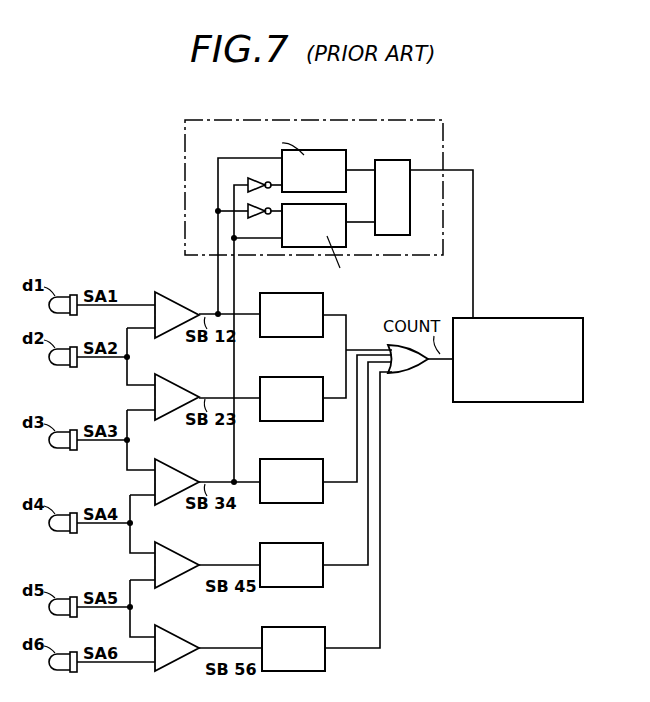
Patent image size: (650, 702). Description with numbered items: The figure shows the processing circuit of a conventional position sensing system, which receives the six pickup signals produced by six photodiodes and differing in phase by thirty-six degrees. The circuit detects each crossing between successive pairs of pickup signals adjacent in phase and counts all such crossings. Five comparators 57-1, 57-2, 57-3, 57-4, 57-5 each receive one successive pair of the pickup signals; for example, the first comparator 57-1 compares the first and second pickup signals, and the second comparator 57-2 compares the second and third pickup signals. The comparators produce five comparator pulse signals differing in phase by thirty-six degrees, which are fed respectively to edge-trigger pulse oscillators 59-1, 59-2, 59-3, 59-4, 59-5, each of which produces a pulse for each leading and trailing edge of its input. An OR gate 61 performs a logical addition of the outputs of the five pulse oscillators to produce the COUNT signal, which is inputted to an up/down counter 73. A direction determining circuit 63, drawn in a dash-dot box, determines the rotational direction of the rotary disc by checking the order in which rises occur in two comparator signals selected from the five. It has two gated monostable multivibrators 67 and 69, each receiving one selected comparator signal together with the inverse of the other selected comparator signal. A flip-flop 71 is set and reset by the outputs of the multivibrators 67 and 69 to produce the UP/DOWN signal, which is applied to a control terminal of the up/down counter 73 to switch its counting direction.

The direction determining circuit 63 is at (310, 300).
The gated monostable multivibrator 67 is at (347, 160).
The gated monostable multivibrator 69 is at (347, 238).
The flip-flop 71 is at (402, 162).
The first comparator 57-1 is at (175, 284).
The second comparator 57-2 is at (175, 367).
The comparator 57-3 is at (175, 451).
The comparator 57-4 is at (175, 534).
The comparator 57-5 is at (175, 617).
The edge-trigger pulse oscillator 59-1 is at (270, 293).
The edge-trigger pulse oscillator 59-2 is at (270, 377).
The edge-trigger pulse oscillator 59-3 is at (270, 459).
The edge-trigger pulse oscillator 59-4 is at (270, 543).
The edge-trigger pulse oscillator 59-5 is at (272, 627).
The OR gate 61 is at (407, 376).
The up/down counter 73 is at (566, 403).